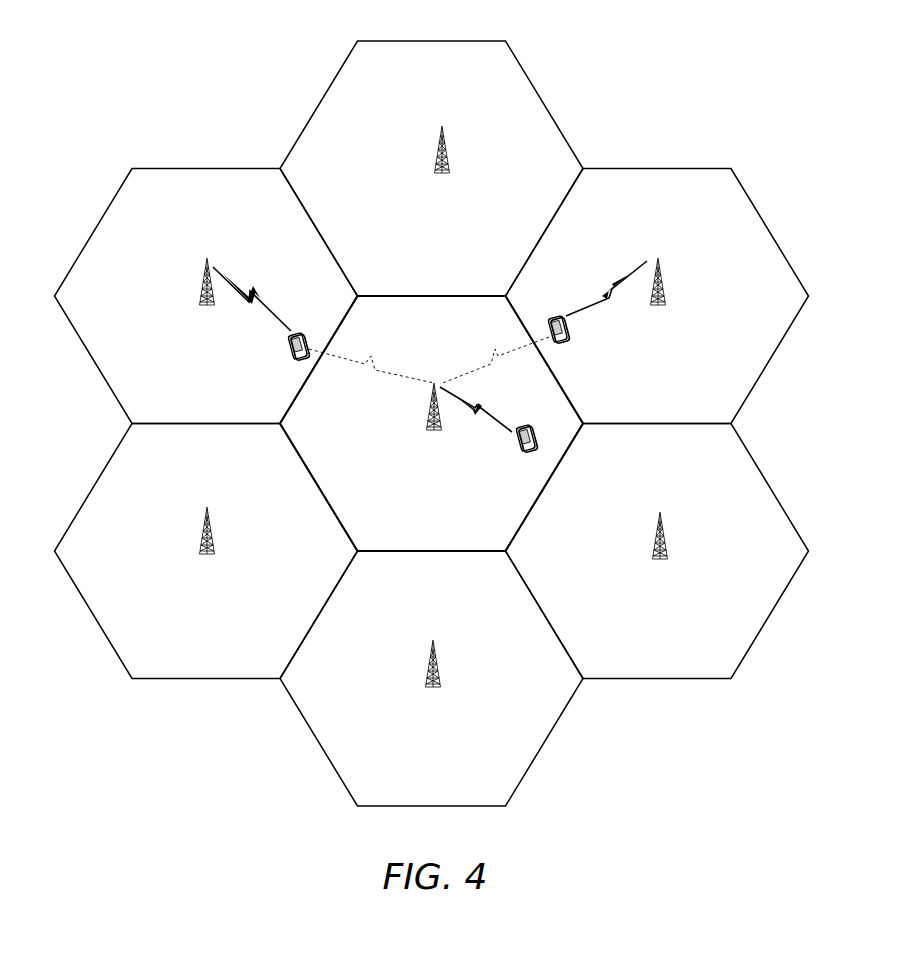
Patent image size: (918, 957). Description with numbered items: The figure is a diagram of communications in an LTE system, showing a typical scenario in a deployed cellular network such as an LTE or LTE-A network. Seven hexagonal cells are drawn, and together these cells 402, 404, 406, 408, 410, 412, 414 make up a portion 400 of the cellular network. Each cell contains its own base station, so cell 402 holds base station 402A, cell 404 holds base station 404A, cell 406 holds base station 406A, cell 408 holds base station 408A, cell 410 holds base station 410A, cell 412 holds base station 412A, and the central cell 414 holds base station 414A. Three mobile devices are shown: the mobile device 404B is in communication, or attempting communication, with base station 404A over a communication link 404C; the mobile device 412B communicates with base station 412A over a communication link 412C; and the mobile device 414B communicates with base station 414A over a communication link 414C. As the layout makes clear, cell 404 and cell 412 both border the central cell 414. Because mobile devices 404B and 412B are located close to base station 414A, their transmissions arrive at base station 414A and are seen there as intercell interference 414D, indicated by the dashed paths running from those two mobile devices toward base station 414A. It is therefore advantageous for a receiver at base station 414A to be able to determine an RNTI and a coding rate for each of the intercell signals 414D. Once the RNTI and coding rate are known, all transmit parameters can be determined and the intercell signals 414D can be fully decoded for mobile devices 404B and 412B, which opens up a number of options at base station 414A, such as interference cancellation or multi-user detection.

The portion of the cellular network 400 is at (283, 52).
The cell 402 is at (431, 168).
The base station 402A is at (442, 164).
The cell 404 is at (657, 296).
The base station 404A is at (660, 296).
The mobile device 404B is at (578, 342).
The communication link 404C is at (596, 288).
The cell 406 is at (657, 551).
The base station 406A is at (662, 551).
The cell 408 is at (431, 678).
The base station 408A is at (434, 678).
The cell 410 is at (206, 551).
The base station 410A is at (208, 547).
The cell 412 is at (206, 296).
The base station 412A is at (209, 296).
The mobile device 412B is at (270, 347).
The communication link 412C is at (260, 299).
The cell 414 is at (431, 423).
The base station 414A is at (434, 421).
The mobile device 414B is at (519, 450).
The communication link 414C is at (488, 409).
The intercell interference 414D is at (376, 356).